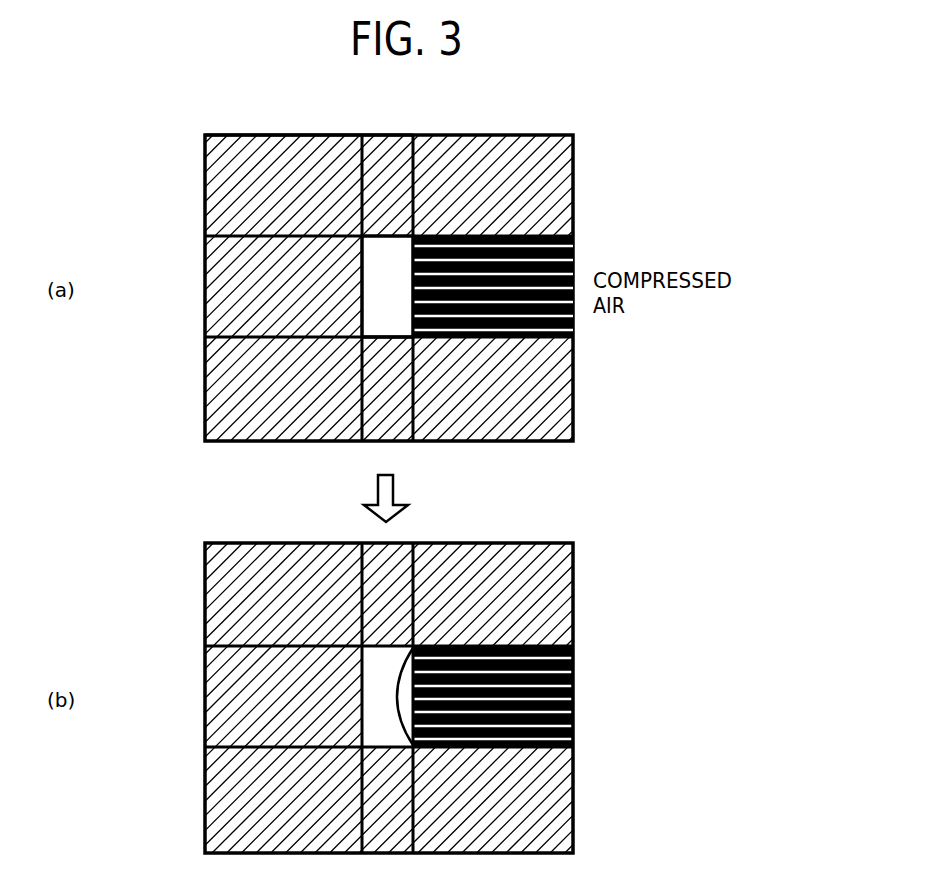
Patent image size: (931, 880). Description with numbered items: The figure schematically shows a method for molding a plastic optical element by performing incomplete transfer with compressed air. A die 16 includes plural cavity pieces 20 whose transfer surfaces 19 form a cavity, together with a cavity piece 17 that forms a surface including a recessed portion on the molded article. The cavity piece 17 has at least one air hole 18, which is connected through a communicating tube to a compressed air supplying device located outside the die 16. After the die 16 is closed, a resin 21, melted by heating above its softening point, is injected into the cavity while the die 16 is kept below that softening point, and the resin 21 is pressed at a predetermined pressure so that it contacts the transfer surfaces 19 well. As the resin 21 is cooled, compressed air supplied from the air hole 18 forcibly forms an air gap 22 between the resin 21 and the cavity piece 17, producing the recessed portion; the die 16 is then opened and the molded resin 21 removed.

The die 16 is at (188, 188).
The cavity piece 17 is at (527, 234).
The air hole 18 is at (484, 244).
The transfer surfaces 19 is at (387, 340).
The cavity pieces 20 is at (255, 148).
The resin 21 is at (402, 323).
The air gap 22 is at (402, 693).